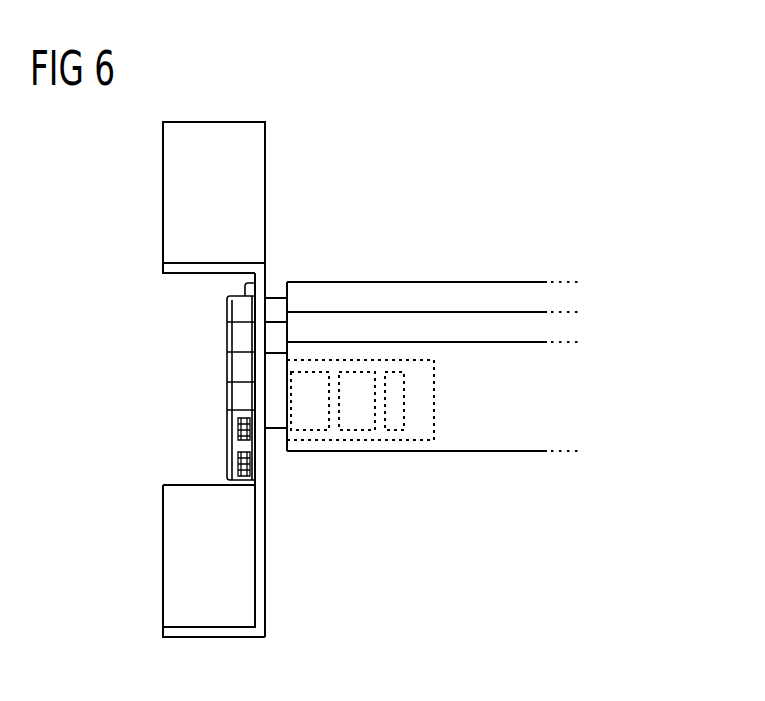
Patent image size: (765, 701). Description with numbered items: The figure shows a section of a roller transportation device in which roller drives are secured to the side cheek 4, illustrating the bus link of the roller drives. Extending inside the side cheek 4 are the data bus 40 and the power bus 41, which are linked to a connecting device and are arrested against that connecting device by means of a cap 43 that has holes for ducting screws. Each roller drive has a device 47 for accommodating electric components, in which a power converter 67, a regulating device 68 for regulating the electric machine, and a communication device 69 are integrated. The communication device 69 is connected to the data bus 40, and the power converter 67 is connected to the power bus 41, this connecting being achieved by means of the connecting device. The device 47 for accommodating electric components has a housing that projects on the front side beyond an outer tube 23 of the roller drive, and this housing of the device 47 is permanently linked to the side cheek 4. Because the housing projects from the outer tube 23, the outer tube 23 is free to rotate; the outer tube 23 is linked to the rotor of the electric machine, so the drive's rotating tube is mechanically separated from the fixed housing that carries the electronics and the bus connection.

The side cheek 4 is at (170, 208).
The device for accommodating electric components 47 is at (274, 303).
The outer tube 23 is at (400, 283).
The cap 43 is at (245, 396).
The data bus 40 is at (230, 437).
The power bus 41 is at (233, 471).
The power converter 67 is at (313, 430).
The communication device 69 is at (362, 430).
The regulating device 68 is at (400, 430).